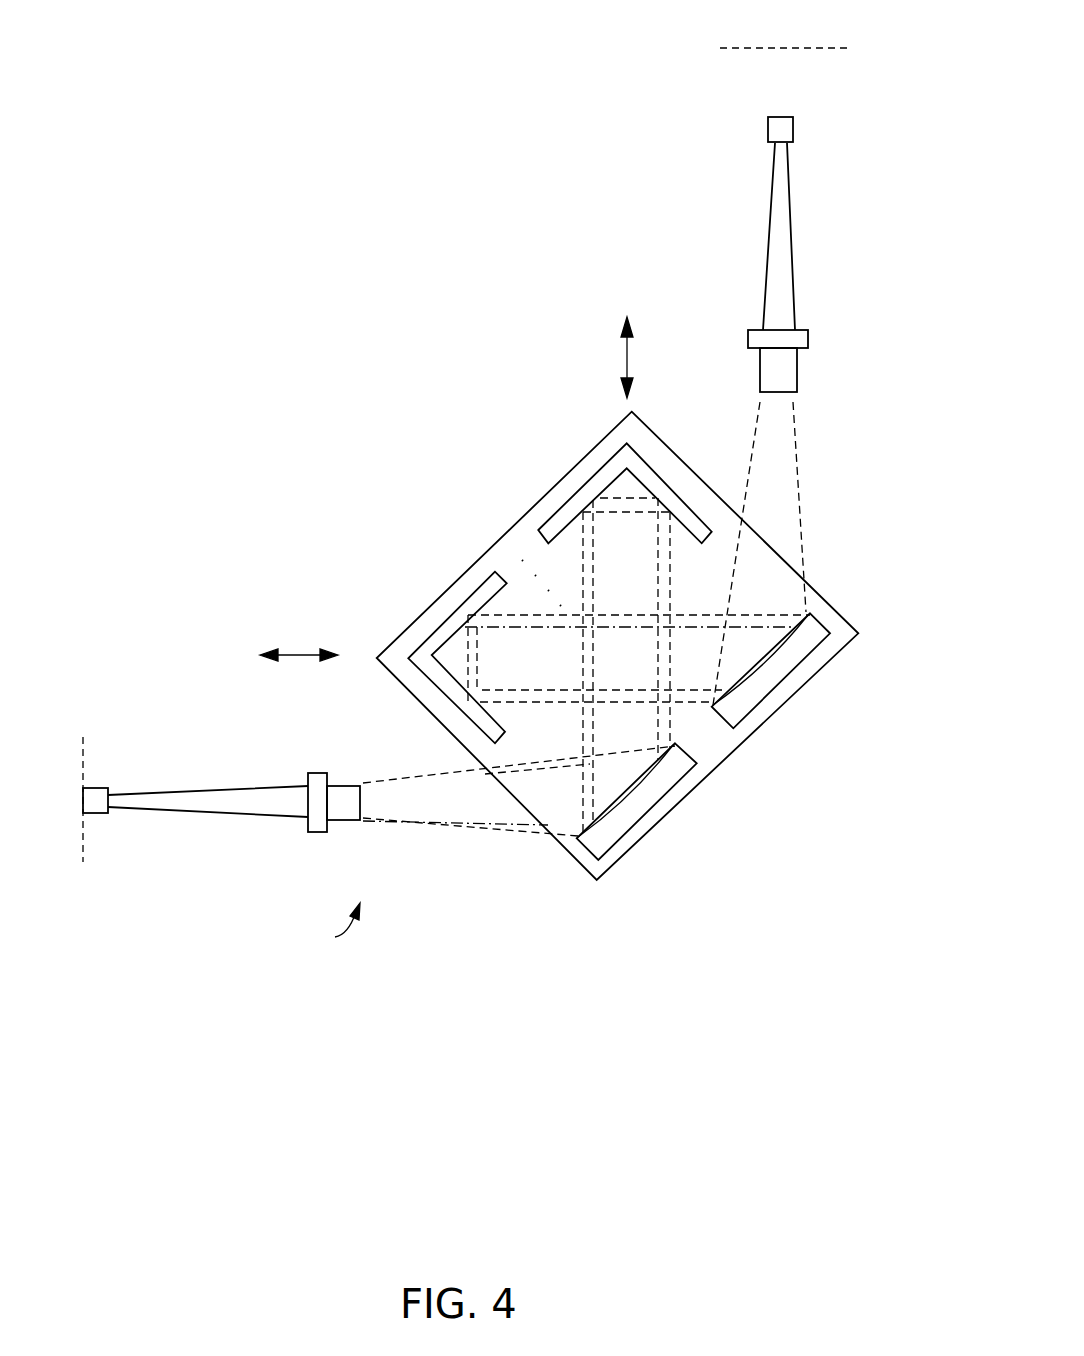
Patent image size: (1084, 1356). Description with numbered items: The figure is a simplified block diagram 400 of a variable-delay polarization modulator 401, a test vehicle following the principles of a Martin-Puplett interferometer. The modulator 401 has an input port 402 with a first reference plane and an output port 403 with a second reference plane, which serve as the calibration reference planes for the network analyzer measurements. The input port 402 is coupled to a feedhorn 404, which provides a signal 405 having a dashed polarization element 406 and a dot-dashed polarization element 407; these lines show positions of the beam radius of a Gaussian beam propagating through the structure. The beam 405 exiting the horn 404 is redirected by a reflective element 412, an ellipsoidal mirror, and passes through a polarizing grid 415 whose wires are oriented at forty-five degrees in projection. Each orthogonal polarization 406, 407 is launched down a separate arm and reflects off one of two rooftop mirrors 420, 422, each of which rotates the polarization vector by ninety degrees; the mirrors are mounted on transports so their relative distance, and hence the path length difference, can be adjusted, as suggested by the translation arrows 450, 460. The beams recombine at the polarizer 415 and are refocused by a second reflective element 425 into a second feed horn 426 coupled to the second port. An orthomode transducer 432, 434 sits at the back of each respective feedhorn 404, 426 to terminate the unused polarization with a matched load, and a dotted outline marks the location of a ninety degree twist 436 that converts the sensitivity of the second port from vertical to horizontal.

The simplified block diagram 400 is at (342, 335).
The variable-delay polarization modulator 401 is at (583, 870).
The input port 402 is at (85, 747).
The output port 403 is at (755, 48).
The feedhorn 404 is at (280, 787).
The signal 405 is at (306, 928).
The polarization element 406 is at (497, 832).
The polarization element 407 is at (497, 822).
The reflective element 412 is at (632, 828).
The polarizing grid 415 is at (520, 558).
The rooftop mirror 420 is at (448, 618).
The rooftop mirror 422 is at (598, 472).
The second reflective element 425 is at (775, 688).
The second feed horn 426 is at (767, 218).
The orthomode transducer 432 is at (90, 813).
The orthomode transducer 434 is at (793, 132).
The ninety degree twist 436 is at (790, 75).
The horizontal translation direction 450 is at (302, 653).
The vertical translation direction 460 is at (627, 365).